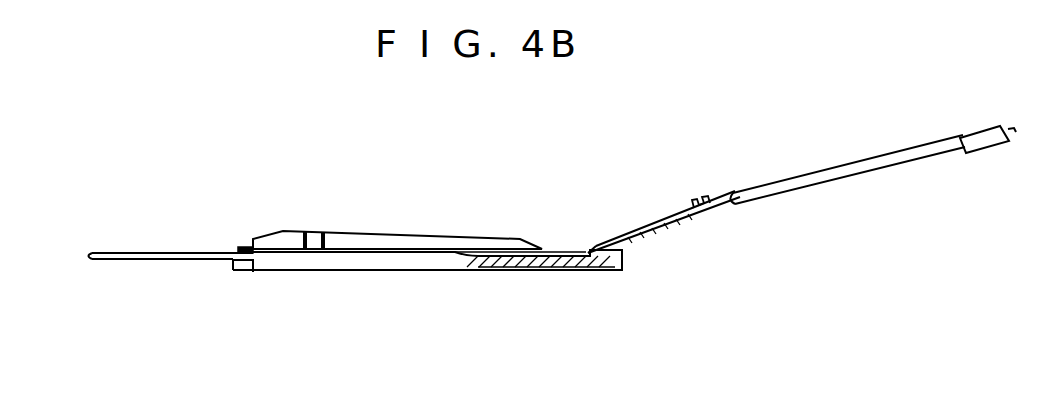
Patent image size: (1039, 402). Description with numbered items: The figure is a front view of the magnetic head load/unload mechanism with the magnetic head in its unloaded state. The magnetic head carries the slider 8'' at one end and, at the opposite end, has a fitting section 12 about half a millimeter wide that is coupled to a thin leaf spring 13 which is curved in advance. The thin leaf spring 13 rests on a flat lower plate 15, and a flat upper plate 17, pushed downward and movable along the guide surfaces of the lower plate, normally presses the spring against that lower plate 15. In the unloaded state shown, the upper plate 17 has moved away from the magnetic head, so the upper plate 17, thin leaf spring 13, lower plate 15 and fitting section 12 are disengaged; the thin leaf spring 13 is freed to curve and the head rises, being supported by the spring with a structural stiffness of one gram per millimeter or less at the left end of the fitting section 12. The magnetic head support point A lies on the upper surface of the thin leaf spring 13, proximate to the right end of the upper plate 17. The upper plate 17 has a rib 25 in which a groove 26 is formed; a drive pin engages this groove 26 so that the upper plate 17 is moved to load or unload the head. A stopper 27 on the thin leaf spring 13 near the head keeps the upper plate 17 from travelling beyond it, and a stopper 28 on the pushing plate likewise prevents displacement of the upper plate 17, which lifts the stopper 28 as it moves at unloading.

The slider 8'' is at (873, 179).
The fitting section 12 is at (652, 238).
The thin leaf spring 13 is at (615, 243).
The lower plate 15 is at (506, 270).
The upper plate 17 is at (118, 251).
The rib 25 is at (418, 238).
The groove 26 is at (316, 246).
The stopper 27 is at (690, 206).
The stopper 28 is at (240, 247).
The magnetic head support point A is at (547, 254).